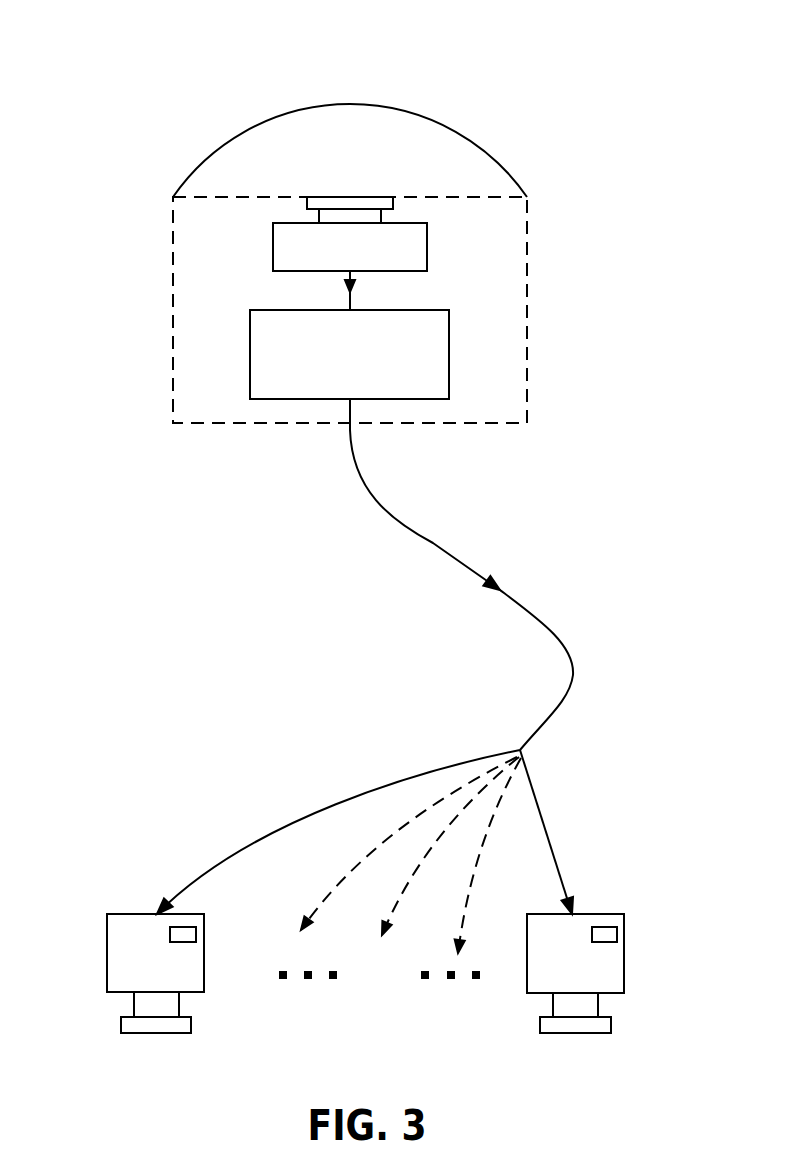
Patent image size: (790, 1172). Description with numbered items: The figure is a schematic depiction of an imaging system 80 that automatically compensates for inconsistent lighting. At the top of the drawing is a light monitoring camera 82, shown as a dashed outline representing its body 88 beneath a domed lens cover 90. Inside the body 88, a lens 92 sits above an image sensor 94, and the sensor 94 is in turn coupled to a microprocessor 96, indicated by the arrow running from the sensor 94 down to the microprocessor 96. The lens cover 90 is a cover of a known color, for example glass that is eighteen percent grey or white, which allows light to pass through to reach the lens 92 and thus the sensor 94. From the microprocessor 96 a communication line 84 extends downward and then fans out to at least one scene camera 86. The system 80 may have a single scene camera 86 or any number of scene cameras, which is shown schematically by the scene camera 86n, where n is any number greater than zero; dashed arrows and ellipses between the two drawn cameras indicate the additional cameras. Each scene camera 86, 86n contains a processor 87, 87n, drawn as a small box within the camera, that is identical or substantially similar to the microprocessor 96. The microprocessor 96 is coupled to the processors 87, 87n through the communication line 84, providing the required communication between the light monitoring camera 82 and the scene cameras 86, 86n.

The imaging system 80 is at (108, 87).
The light monitoring camera 82 is at (123, 222).
The communication line 84 is at (433, 540).
The scene camera 86 is at (132, 968).
The scene camera 86n is at (603, 969).
The processor 87 is at (185, 934).
The processor 87n is at (607, 934).
The body 88 is at (193, 328).
The lens cover 90 is at (427, 115).
The lens 92 is at (377, 203).
The image sensor 94 is at (400, 244).
The microprocessor 96 is at (427, 359).